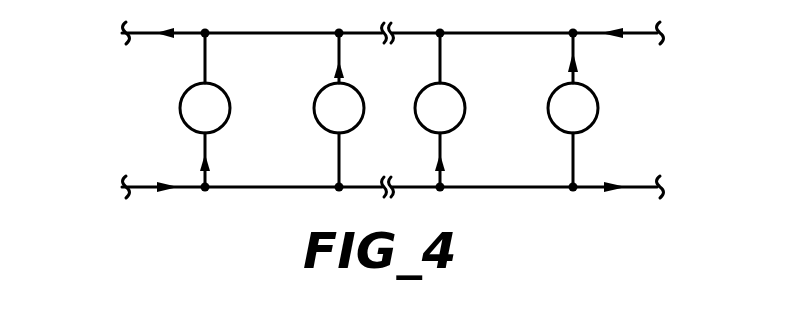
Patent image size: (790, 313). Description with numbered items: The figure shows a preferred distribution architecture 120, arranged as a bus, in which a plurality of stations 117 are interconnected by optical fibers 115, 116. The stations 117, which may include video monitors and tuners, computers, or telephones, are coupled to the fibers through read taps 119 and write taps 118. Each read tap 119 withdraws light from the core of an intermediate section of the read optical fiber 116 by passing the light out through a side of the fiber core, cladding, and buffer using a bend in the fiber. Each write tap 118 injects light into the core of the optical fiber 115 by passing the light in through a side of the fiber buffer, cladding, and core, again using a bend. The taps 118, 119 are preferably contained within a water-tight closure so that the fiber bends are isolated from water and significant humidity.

The optical fiber 115 is at (579, 36).
The read optical fiber 116 is at (590, 185).
The station 117 is at (315, 105).
The write tap 118 is at (203, 37).
The read tap 119 is at (203, 184).
The distribution architecture 120 is at (128, 114).